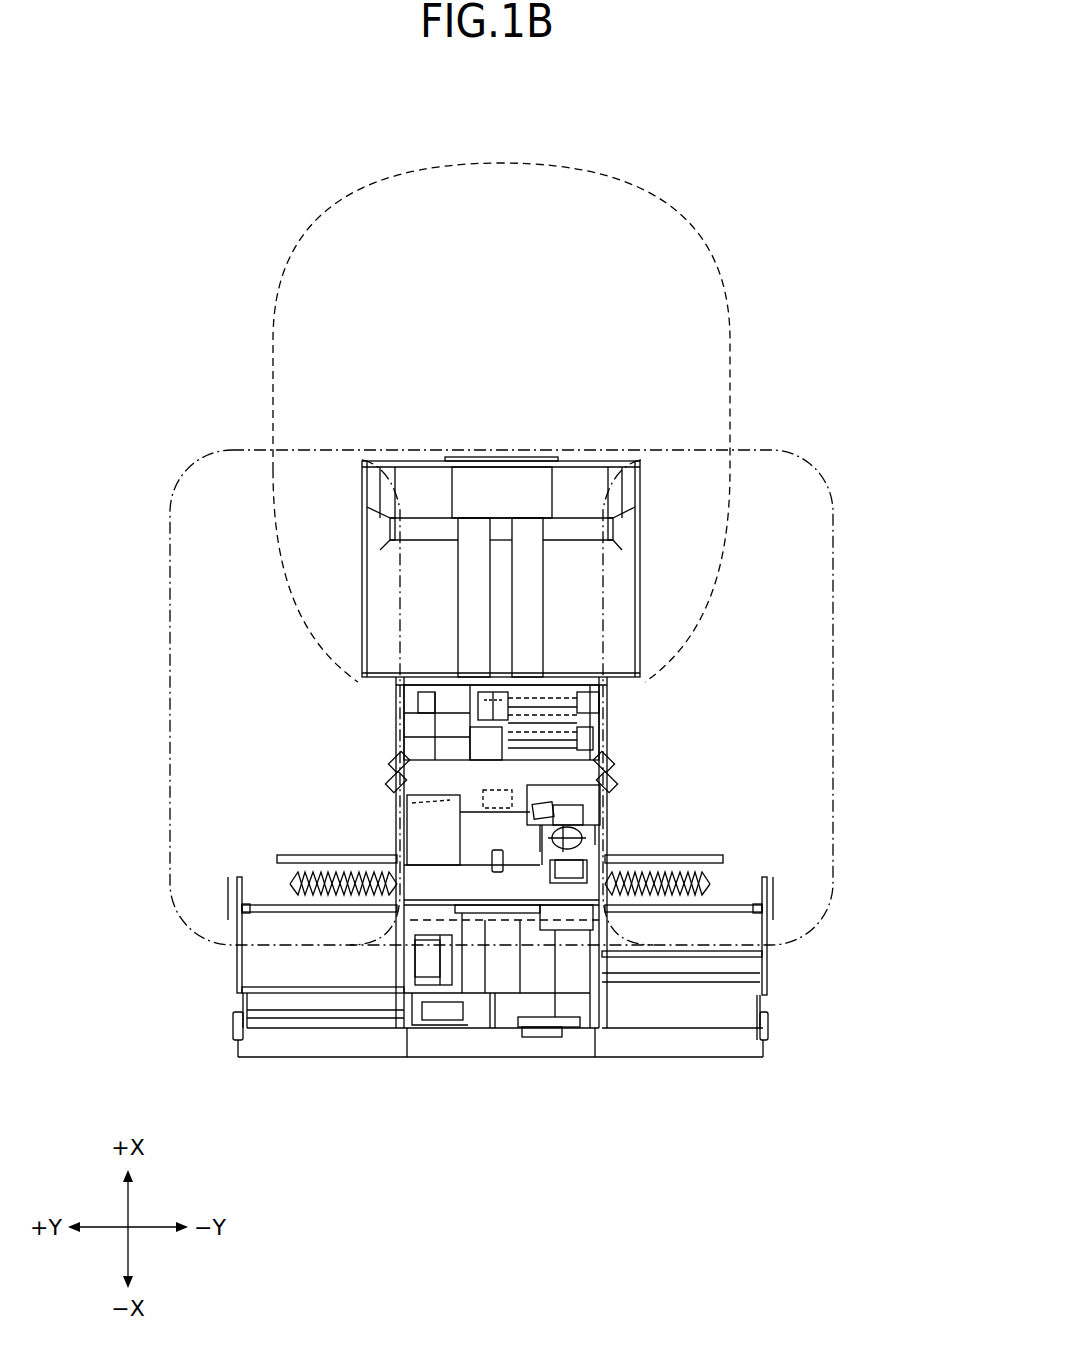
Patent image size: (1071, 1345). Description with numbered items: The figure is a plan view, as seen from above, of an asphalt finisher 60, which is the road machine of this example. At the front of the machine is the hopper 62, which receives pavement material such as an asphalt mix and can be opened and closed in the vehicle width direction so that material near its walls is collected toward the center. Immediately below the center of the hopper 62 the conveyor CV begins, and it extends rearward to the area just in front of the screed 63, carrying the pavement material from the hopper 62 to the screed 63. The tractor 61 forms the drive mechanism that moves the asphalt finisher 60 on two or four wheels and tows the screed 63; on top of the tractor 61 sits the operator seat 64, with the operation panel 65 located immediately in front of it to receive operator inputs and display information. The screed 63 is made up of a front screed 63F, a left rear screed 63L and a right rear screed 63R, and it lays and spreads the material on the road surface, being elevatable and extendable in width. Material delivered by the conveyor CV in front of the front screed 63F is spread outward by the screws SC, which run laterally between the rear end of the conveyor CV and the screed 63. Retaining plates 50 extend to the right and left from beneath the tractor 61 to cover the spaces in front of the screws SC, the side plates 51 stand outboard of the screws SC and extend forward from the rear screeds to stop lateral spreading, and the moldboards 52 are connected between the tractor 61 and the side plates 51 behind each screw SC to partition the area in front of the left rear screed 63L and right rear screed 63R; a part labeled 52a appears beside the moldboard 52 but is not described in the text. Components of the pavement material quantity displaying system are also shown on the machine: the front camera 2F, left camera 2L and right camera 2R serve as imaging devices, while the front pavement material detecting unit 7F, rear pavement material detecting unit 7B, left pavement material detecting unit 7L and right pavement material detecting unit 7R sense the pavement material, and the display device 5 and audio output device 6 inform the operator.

The asphalt finisher 60 is at (846, 421).
The conveyor CV is at (472, 537).
The hopper 62 is at (648, 598).
The display device 5 is at (479, 852).
The front camera 2F is at (500, 690).
The front pavement material detecting unit 7F is at (478, 712).
The left camera 2L is at (392, 765).
The left pavement material detecting unit 7L is at (390, 786).
The right camera 2R is at (612, 765).
The right pavement material detecting unit 7R is at (613, 786).
The audio output device 6 is at (483, 800).
The rear pavement material detecting unit 7B is at (492, 858).
The operator seat 64 is at (568, 883).
The operation panel 65 is at (567, 850).
The tractor 61 is at (433, 1012).
The front screed 63F is at (565, 930).
The screed 63 is at (664, 1010).
The left rear screed 63L is at (323, 1002).
The right rear screed 63R is at (677, 963).
The retaining plates 50 is at (277, 858).
The screws SC is at (290, 884).
The arm post 52a is at (237, 937).
The side plates 51 is at (295, 912).
The moldboards 52 is at (242, 990).